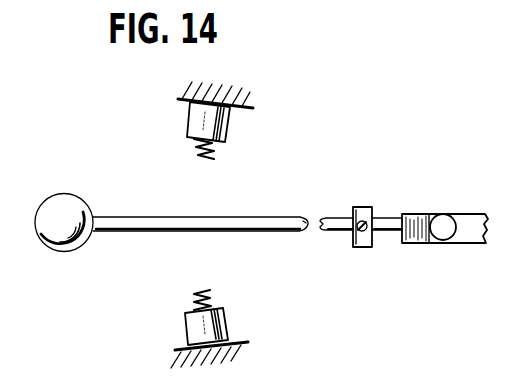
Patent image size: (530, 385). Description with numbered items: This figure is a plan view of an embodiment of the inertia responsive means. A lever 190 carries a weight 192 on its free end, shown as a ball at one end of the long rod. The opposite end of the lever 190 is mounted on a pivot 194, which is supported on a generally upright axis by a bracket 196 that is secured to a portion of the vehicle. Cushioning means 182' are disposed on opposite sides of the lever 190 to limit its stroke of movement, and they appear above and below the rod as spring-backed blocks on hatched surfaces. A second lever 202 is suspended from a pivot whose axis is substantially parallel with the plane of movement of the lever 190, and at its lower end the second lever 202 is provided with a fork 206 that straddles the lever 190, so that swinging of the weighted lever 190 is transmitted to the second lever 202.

The lever 190 is at (278, 223).
The weight 192 is at (73, 215).
The pivot 194 is at (443, 224).
The bracket 196 is at (470, 235).
The second lever 202 is at (358, 232).
The fork 206 is at (365, 207).
The cushioning means 182' is at (229, 225).